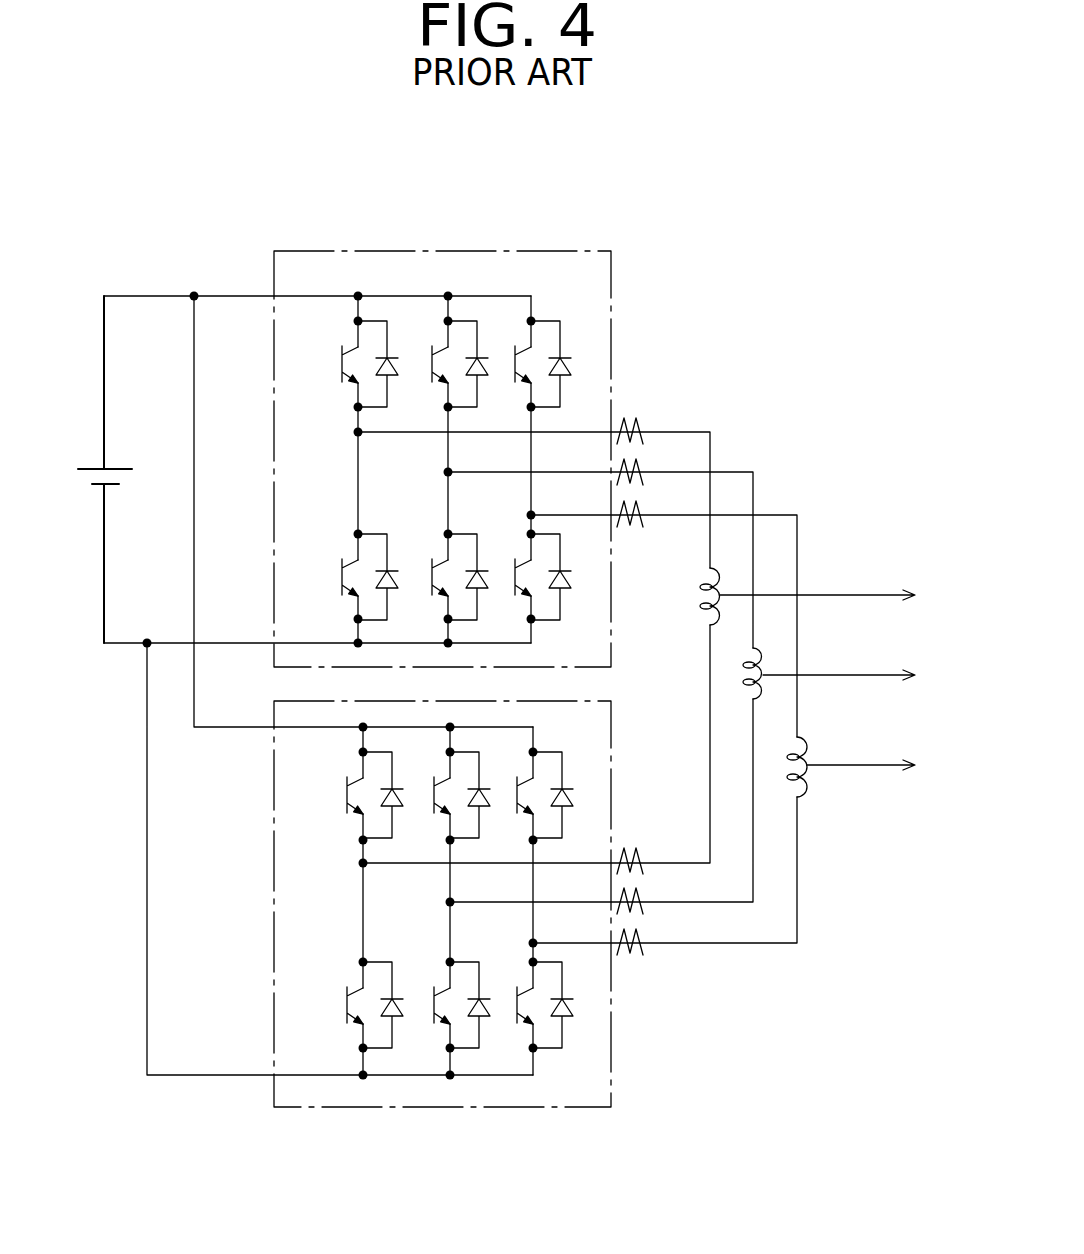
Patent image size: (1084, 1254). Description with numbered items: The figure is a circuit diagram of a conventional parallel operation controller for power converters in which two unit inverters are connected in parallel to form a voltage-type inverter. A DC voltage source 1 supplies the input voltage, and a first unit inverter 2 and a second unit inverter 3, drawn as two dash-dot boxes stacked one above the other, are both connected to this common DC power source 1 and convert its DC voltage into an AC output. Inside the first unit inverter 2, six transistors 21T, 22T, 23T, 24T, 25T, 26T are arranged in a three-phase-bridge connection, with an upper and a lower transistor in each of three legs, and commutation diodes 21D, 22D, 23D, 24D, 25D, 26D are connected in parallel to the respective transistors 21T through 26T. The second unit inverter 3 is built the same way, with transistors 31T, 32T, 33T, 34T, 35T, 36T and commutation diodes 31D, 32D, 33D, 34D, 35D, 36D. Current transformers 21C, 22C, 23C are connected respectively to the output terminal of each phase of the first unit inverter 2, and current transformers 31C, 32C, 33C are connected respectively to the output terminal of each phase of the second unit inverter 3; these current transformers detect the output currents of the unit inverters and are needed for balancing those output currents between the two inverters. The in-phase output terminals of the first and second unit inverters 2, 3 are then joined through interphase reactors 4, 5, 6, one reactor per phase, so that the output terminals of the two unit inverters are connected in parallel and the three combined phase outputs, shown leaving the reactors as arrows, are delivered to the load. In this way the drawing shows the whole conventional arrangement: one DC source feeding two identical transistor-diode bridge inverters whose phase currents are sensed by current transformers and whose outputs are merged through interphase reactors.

The DC voltage source 1 is at (92, 467).
The first unit inverter 2 is at (540, 248).
The second unit inverter 3 is at (462, 1110).
The interphase reactor 4 is at (706, 591).
The interphase reactor 5 is at (745, 680).
The interphase reactor 6 is at (800, 740).
The transistor 21T is at (342, 365).
The transistor 22T is at (342, 580).
The transistor 23T is at (432, 365).
The transistor 24T is at (432, 580).
The transistor 25T is at (515, 365).
The transistor 26T is at (515, 580).
The commutation diode 21D is at (400, 357).
The commutation diode 22D is at (398, 570).
The commutation diode 23D is at (485, 357).
The commutation diode 24D is at (482, 570).
The commutation diode 25D is at (573, 357).
The commutation diode 26D is at (563, 583).
The transistor 31T is at (347, 798).
The transistor 32T is at (347, 1000).
The transistor 33T is at (434, 798).
The transistor 34T is at (434, 1010).
The transistor 35T is at (517, 798).
The transistor 36T is at (517, 1010).
The commutation diode 31D is at (402, 788).
The commutation diode 32D is at (398, 1000).
The commutation diode 33D is at (488, 788).
The commutation diode 34D is at (483, 1000).
The commutation diode 35D is at (572, 788).
The commutation diode 36D is at (573, 1010).
The current transformer 21C is at (632, 418).
The current transformer 22C is at (637, 460).
The current transformer 23C is at (640, 502).
The current transformer 31C is at (640, 850).
The current transformer 32C is at (645, 896).
The current transformer 33C is at (648, 940).